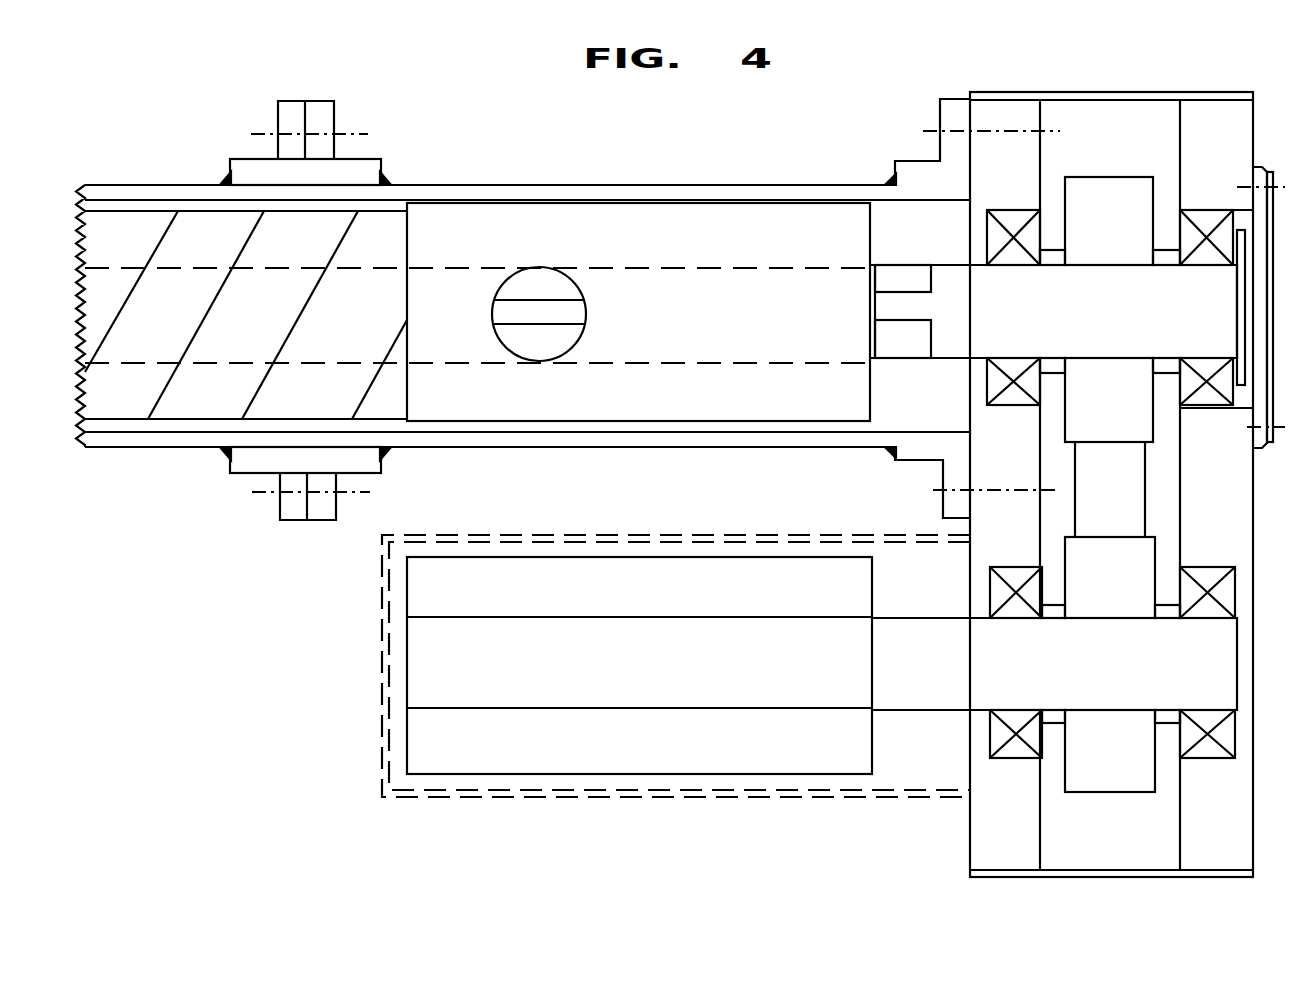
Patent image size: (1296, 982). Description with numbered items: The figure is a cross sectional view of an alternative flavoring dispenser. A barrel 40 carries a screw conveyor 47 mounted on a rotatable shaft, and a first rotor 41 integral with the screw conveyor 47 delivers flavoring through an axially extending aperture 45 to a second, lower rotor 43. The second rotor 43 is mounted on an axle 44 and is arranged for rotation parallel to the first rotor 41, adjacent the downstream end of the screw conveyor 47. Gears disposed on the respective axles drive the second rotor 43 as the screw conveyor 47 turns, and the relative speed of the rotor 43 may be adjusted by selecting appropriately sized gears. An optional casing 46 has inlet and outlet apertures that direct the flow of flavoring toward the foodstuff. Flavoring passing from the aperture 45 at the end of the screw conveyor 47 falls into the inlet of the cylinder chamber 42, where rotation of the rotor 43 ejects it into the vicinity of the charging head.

The barrel 40 is at (824, 185).
The first rotor 41 is at (628, 299).
The cylinder chamber 42 is at (398, 607).
The second rotor 43 is at (477, 742).
The axle 44 is at (933, 680).
The axially extending aperture 45 is at (706, 437).
The casing 46 is at (737, 538).
The screw conveyor 47 is at (135, 238).